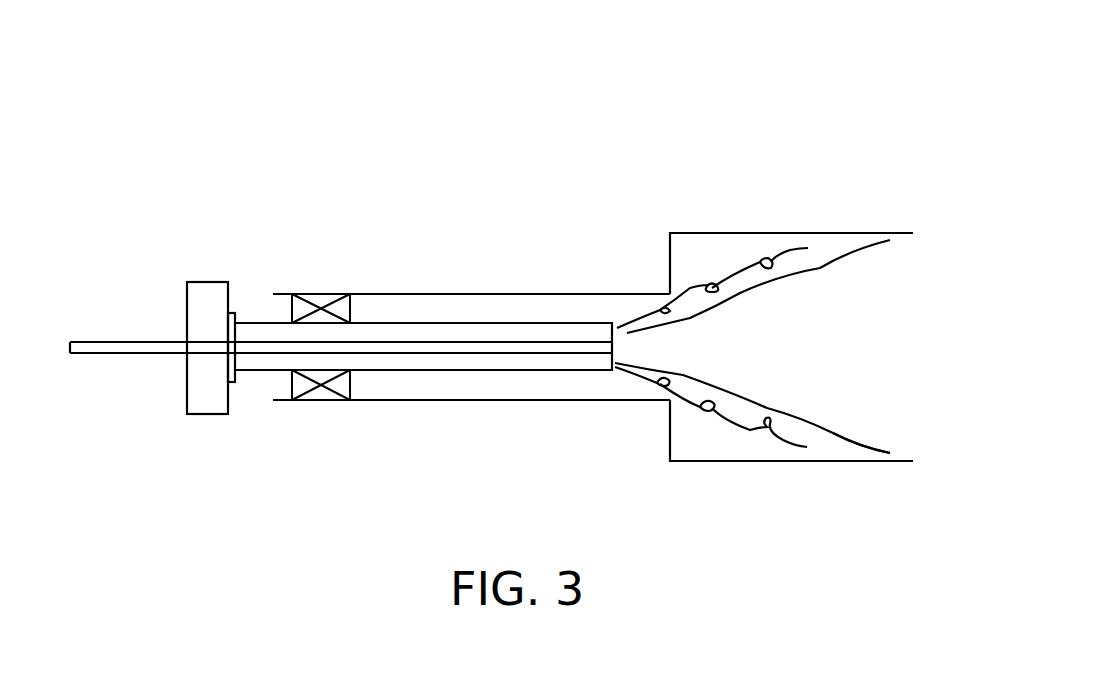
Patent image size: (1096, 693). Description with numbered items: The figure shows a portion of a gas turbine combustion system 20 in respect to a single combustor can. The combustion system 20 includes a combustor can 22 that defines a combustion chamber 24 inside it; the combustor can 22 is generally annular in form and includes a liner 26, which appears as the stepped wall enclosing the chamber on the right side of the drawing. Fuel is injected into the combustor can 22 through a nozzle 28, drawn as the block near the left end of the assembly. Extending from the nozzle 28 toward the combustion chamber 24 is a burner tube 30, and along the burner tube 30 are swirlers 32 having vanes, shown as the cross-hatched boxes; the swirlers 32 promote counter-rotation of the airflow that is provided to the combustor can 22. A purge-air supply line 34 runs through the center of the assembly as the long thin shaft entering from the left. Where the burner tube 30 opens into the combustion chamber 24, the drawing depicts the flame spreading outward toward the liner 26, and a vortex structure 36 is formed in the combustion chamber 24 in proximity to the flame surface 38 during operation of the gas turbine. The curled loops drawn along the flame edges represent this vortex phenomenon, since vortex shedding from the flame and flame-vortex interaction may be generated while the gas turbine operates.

The gas turbine combustion system 20 is at (160, 72).
The combustor can 22 is at (845, 220).
The combustion chamber 24 is at (812, 362).
The liner 26 is at (702, 232).
The nozzle 28 is at (210, 274).
The burner tube 30 is at (483, 293).
The swirlers 32 is at (326, 296).
The purge-air supply line 34 is at (93, 341).
The vortex structure 36 is at (708, 421).
The flame surface 38 is at (847, 428).